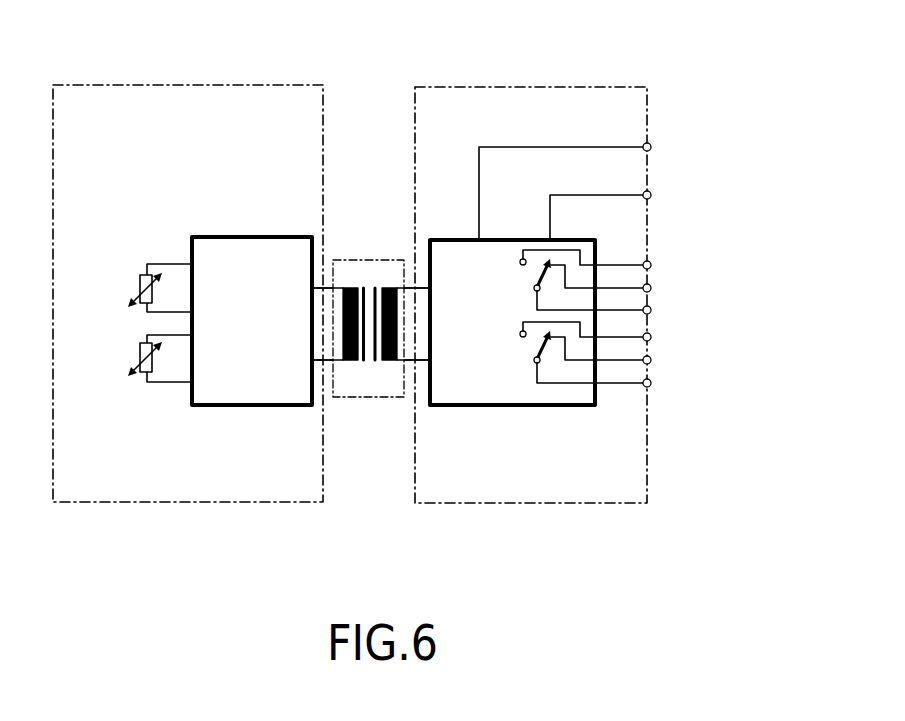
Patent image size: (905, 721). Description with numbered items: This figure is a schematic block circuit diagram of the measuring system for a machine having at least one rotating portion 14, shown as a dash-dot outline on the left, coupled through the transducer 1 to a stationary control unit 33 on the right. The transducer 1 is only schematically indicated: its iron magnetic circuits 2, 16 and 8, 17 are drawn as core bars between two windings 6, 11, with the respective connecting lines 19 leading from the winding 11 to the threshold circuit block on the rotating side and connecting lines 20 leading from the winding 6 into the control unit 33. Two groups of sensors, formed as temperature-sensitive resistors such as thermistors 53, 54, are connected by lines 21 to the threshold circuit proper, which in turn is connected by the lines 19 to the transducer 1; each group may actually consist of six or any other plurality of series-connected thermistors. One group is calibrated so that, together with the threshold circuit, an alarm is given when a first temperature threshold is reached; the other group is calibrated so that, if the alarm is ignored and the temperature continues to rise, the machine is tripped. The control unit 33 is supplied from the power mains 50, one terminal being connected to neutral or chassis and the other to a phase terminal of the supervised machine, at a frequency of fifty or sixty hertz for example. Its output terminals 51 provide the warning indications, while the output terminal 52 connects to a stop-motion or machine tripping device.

The rotary transformer 1 is at (371, 248).
The iron magnetic circuit 2 is at (383, 384).
The iron magnetic circuit 16 is at (376, 362).
The winding 6 is at (385, 287).
The iron magnetic circuit 8 is at (349, 363).
The iron magnetic circuit 17 is at (363, 361).
The winding 11 is at (351, 287).
The rotating unit 14 is at (173, 84).
The connecting lines 19 is at (313, 280).
The connecting lines 20 is at (425, 289).
The lines 21 is at (176, 312).
The control unit 33 is at (518, 87).
The power mains 50 is at (651, 149).
The output terminals 51 is at (651, 267).
The output terminal 52 is at (651, 339).
The thermistors 53 is at (140, 357).
The thermistors 54 is at (140, 287).